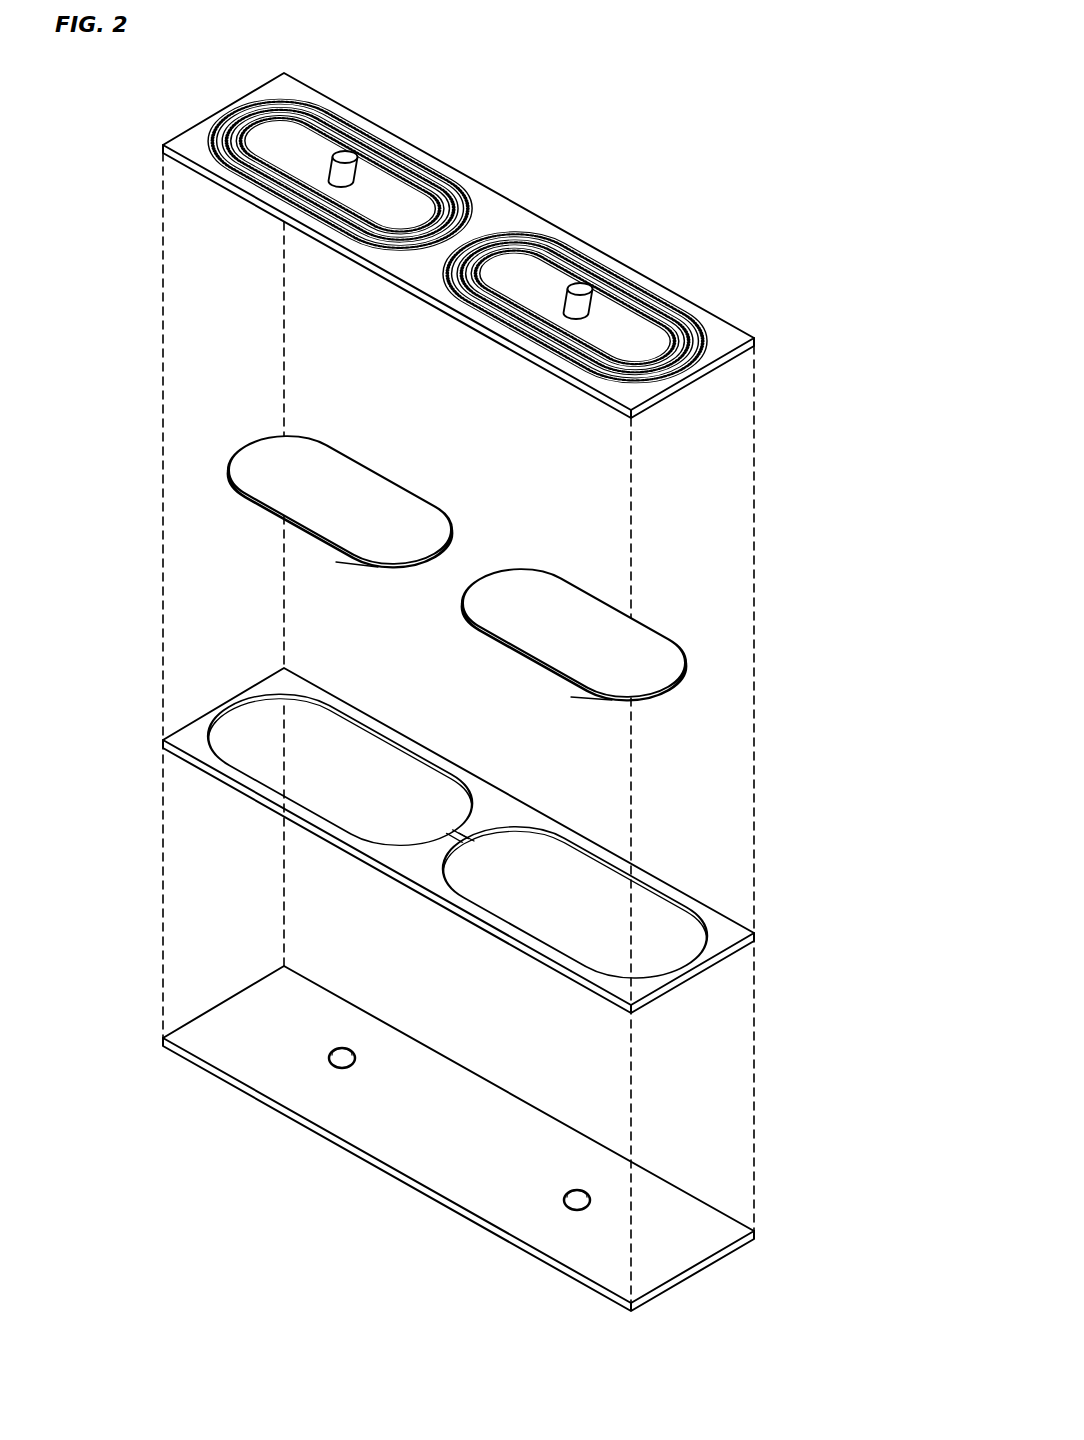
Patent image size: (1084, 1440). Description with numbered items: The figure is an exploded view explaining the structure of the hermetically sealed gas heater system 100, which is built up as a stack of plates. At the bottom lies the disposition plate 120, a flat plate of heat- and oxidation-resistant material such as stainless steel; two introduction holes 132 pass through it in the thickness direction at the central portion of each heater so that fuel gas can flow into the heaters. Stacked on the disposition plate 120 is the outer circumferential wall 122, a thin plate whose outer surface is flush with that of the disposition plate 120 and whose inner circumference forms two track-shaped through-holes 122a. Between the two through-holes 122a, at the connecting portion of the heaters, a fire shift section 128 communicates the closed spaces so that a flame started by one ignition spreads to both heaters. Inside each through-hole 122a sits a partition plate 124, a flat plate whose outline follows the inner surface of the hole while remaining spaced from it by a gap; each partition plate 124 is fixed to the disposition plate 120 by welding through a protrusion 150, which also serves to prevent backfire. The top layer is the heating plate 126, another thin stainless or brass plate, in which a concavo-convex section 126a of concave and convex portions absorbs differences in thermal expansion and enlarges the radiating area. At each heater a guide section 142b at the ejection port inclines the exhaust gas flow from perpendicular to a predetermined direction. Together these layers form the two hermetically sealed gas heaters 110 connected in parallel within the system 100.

The hermetically sealed gas heater system 100 is at (620, 177).
The hermetically sealed gas heater 110 is at (458, 236).
The disposition plate 120 is at (458, 1138).
The outer circumferential wall 122 is at (458, 836).
The through-hole 122a is at (361, 683).
The partition plate 124 is at (245, 463).
The heating plate 126 is at (458, 245).
The concavo-convex section 126a is at (457, 178).
The fire shift section 128 is at (477, 835).
The introduction hole 132 is at (332, 1056).
The guide section 142b is at (335, 143).
The protrusion 150 is at (376, 568).